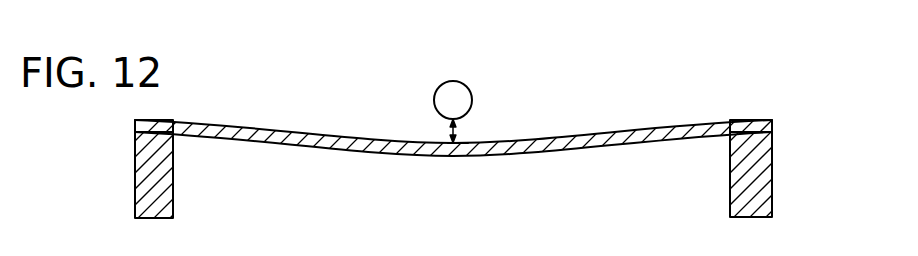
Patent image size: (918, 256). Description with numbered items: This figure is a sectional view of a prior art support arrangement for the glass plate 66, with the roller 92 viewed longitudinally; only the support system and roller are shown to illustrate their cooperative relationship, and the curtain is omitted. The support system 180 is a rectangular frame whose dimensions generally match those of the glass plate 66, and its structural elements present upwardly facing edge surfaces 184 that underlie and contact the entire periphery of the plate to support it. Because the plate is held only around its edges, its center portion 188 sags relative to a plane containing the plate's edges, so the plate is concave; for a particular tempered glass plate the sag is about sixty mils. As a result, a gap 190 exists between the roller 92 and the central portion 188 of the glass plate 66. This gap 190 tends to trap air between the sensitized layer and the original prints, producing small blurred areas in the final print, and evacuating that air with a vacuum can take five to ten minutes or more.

The glass plate 66 is at (418, 160).
The roller 92 is at (468, 88).
The glass plate support system 180 is at (173, 175).
The upwardly facing edge surfaces 184 is at (155, 131).
The center portion 188 is at (458, 146).
The gap 190 is at (447, 135).